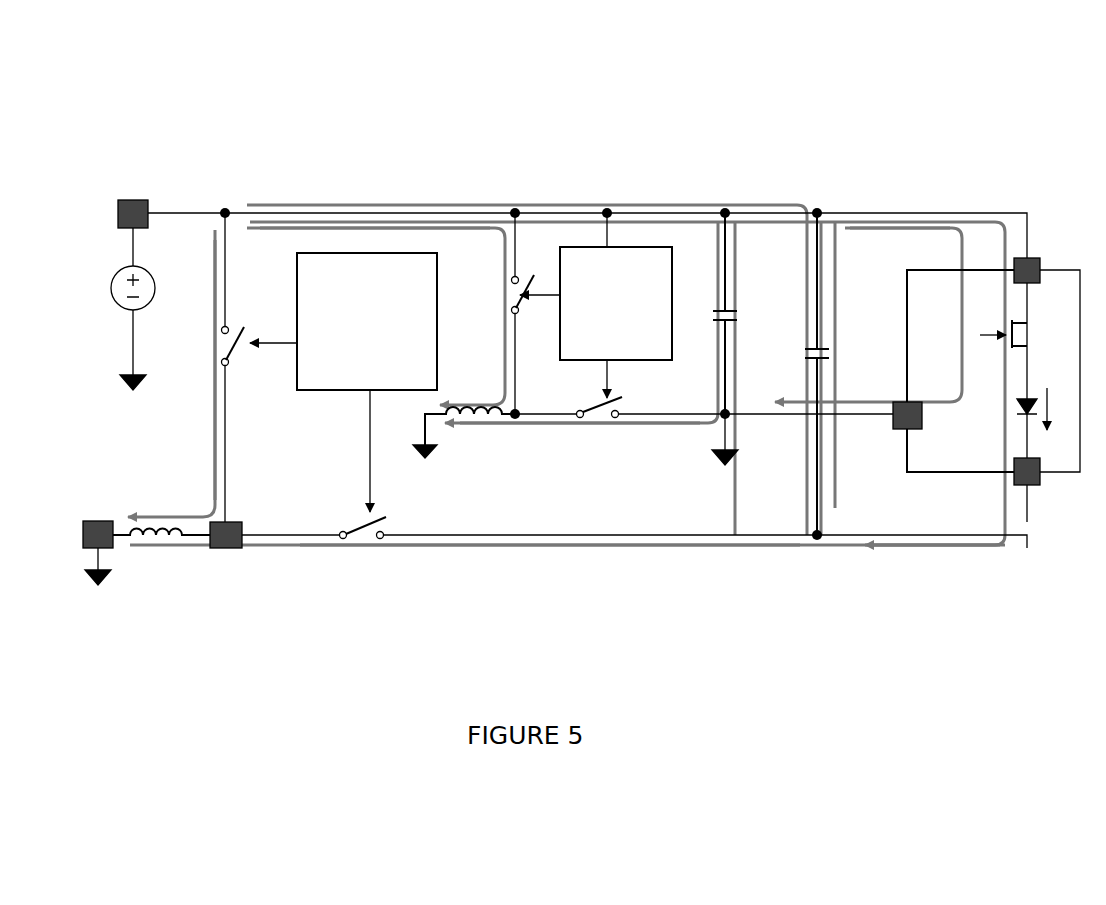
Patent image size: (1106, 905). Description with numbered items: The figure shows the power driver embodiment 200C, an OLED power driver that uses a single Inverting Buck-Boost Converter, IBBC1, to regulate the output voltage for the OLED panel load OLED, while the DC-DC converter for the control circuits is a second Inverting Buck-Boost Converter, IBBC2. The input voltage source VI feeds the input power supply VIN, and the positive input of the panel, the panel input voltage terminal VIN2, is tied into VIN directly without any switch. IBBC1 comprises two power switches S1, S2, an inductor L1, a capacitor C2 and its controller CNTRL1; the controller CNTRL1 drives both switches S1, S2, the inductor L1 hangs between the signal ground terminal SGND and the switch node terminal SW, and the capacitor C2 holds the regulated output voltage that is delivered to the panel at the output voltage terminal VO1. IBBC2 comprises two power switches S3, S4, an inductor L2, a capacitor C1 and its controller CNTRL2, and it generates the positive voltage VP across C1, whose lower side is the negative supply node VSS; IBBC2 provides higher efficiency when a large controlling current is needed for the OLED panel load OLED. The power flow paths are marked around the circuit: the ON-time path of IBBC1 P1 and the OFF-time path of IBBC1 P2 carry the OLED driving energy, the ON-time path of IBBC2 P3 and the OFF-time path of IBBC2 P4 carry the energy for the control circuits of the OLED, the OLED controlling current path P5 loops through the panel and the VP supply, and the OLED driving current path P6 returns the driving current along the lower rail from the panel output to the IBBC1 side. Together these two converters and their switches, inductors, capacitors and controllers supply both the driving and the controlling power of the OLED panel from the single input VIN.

The power driver embodiment 200C is at (818, 165).
The ON-time path of IBBC1 P1 is at (210, 417).
The OFF-time path of IBBC1 P2 is at (560, 543).
The ON-time path of IBBC2 P3 is at (279, 233).
The OFF-time path of IBBC2 P4 is at (553, 427).
The OLED controlling current path P5 is at (914, 229).
The OLED driving current path P6 is at (912, 547).
The input power supply VIN is at (112, 214).
The input voltage source VI is at (118, 309).
The power switch S1 is at (238, 346).
The power switch S2 is at (363, 544).
The power switch S3 is at (517, 294).
The power switch S4 is at (600, 421).
The inductor L1 is at (161, 552).
The inductor L2 is at (464, 420).
The capacitor C1 is at (726, 313).
The capacitor C2 is at (831, 374).
The controller CNTRL1 is at (367, 382).
The controller CNTRL2 is at (616, 322).
The switch node terminal SW is at (225, 548).
The signal ground terminal SGND is at (97, 539).
The negative supply node VSS is at (740, 439).
The OLED panel load OLED is at (986, 371).
The panel input voltage terminal VIN2 is at (1042, 262).
The output voltage terminal VO1 is at (1045, 484).